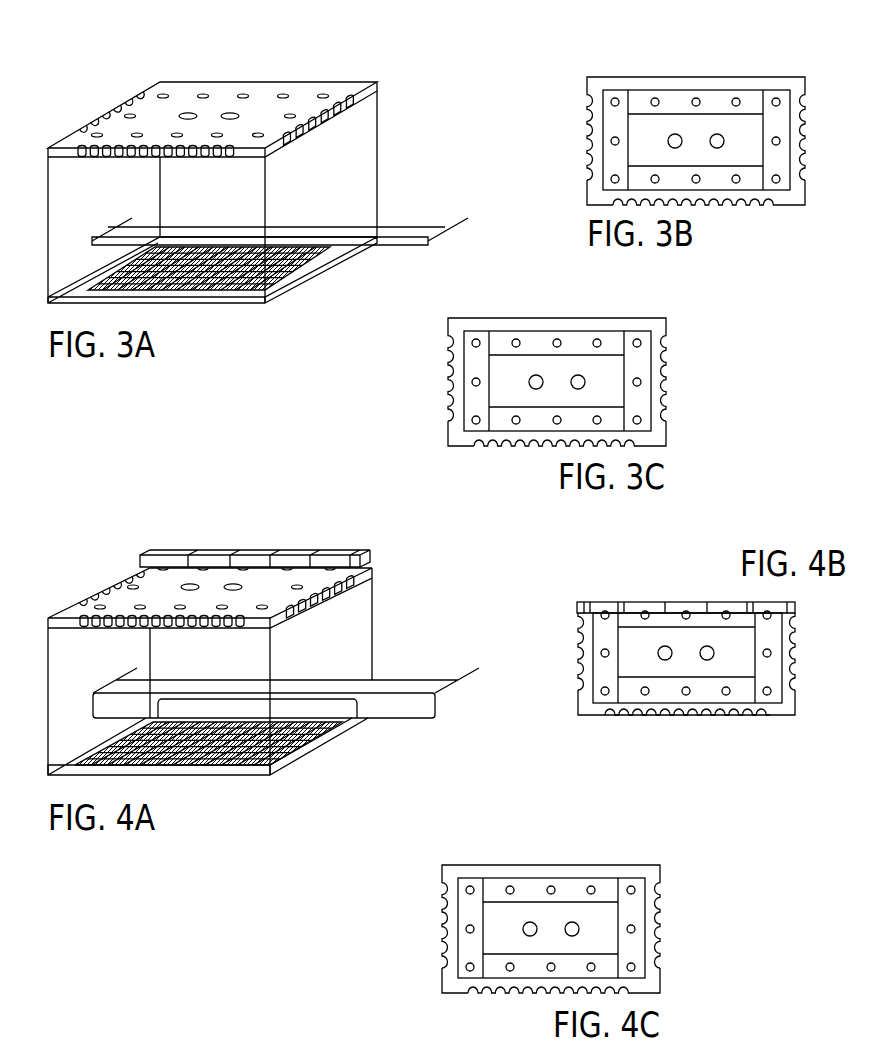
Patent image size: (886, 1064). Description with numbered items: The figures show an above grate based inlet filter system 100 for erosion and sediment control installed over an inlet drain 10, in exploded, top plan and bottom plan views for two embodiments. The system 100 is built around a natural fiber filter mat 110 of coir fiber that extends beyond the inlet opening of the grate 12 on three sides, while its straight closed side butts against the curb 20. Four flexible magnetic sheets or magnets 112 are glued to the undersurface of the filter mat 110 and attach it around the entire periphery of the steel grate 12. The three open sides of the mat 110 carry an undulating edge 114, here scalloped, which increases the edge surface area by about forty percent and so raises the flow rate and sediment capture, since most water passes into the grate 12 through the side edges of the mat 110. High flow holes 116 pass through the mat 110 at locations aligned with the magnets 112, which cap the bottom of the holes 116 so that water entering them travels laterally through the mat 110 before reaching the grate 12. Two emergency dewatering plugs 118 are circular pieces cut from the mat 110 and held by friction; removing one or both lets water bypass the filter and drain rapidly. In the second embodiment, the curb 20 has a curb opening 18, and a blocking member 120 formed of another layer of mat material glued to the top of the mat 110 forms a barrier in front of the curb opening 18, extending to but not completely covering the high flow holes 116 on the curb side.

In FIG. 3A, the inlet drain 10 is at (223, 301).
In FIG. 4A, the inlet drain 10 is at (284, 708).
In FIG. 3A, the grate 12 is at (292, 285).
In FIG. 4A, the grate 12 is at (220, 770).
In FIG. 4A, the curb opening 18 is at (342, 712).
In FIG. 3A, the curb 20 is at (410, 227).
In FIG. 4A, the curb 20 is at (397, 700).
In FIG. 3A, the above grate based inlet filter system 100 is at (403, 67).
In FIG. 4A, the above grate based inlet filter system 100 is at (137, 512).
In FIG. 3B, the natural fiber filter mat 110 is at (801, 79).
In FIG. 3C, the natural fiber filter mat 110 is at (667, 437).
In FIG. 4A, the natural fiber filter mat 110 is at (282, 594).
In FIG. 4B, the natural fiber filter mat 110 is at (686, 664).
In FIG. 4C, the natural fiber filter mat 110 is at (661, 985).
In FIG. 3B, the magnets 112 is at (630, 100).
In FIG. 3C, the magnets 112 is at (581, 338).
In FIG. 4B, the magnets 112 is at (592, 618).
In FIG. 4C, the magnets 112 is at (570, 885).
In FIG. 3A, the undulating edge 114 is at (106, 114).
In FIG. 3B, the undulating edge 114 is at (803, 135).
In FIG. 3C, the undulating edge 114 is at (665, 360).
In FIG. 4A, the undulating edge 114 is at (117, 584).
In FIG. 4B, the undulating edge 114 is at (580, 676).
In FIG. 4C, the undulating edge 114 is at (658, 906).
In FIG. 3A, the high flow holes 116 is at (130, 113).
In FIG. 3B, the high flow holes 116 is at (615, 100).
In FIG. 3C, the high flow holes 116 is at (473, 341).
In FIG. 4A, the high flow holes 116 is at (288, 566).
In FIG. 4B, the high flow holes 116 is at (602, 613).
In FIG. 4C, the high flow holes 116 is at (468, 888).
In FIG. 3A, the emergency dewatering plugs 118 is at (188, 112).
In FIG. 3B, the emergency dewatering plugs 118 is at (675, 134).
In FIG. 3C, the emergency dewatering plugs 118 is at (534, 376).
In FIG. 4A, the emergency dewatering plugs 118 is at (233, 583).
In FIG. 4B, the emergency dewatering plugs 118 is at (663, 646).
In FIG. 4C, the emergency dewatering plugs 118 is at (529, 923).
In FIG. 4A, the blocking member 120 is at (262, 553).
In FIG. 4B, the blocking member 120 is at (661, 604).